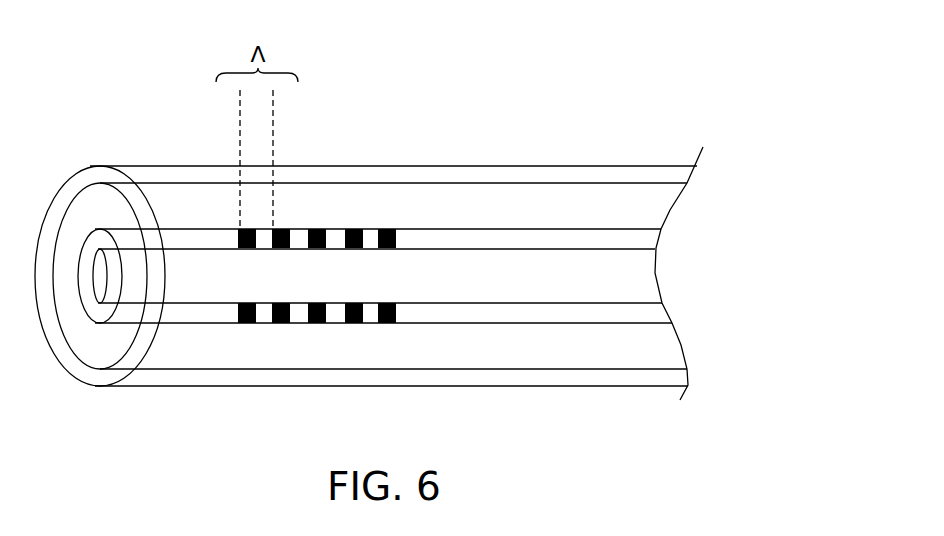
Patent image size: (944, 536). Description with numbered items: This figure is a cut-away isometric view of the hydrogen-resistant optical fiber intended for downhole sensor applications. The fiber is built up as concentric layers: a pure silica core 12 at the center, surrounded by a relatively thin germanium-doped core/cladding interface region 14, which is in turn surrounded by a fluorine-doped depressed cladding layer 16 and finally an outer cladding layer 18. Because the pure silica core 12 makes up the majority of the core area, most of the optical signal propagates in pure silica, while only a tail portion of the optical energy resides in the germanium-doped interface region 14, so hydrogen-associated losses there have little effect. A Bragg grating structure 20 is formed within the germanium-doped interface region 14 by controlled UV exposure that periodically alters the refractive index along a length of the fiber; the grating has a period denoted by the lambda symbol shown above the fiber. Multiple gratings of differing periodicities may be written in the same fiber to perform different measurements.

The pure silica core 12 is at (93, 318).
The germanium-doped core/cladding interface region 14 is at (85, 282).
The fluorine-doped depressed cladding layer 16 is at (108, 207).
The outer cladding layer 18 is at (60, 207).
The Bragg grating structure 20 is at (228, 215).